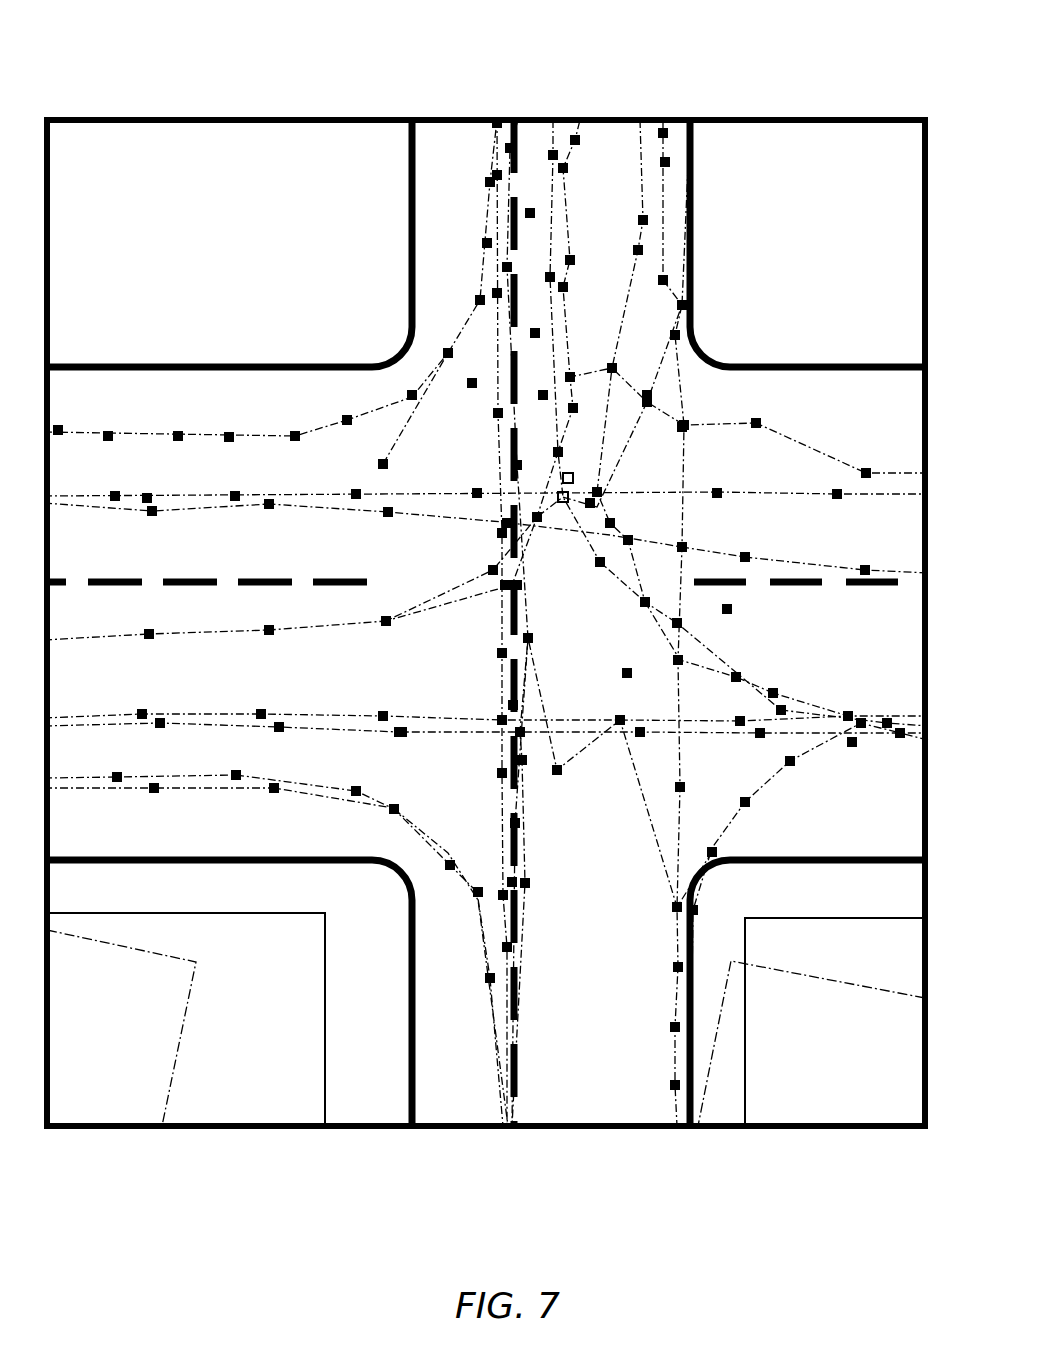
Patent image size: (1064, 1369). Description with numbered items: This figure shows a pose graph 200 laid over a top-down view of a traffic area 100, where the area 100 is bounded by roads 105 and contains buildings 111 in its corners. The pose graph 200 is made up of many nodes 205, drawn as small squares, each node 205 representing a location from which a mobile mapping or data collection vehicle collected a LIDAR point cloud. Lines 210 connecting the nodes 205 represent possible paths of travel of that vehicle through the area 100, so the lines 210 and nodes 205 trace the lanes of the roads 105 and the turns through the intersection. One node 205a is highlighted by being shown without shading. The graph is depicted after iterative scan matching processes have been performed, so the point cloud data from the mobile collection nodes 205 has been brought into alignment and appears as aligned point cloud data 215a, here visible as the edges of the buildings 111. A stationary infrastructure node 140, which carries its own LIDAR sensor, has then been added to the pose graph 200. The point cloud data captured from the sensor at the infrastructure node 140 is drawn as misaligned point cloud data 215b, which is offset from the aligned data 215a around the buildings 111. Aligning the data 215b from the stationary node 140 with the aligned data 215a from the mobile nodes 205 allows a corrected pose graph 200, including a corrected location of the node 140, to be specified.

The traffic area 100 is at (230, 80).
The road 105 is at (452, 148).
The pose graph 200 is at (873, 18).
The node 205 is at (178, 430).
The line 210 is at (457, 322).
The node 205a is at (575, 477).
The infrastructure node 140 is at (568, 502).
The building 111 is at (270, 998).
The aligned point cloud data 215a is at (325, 1088).
The misaligned point cloud data 215b is at (183, 1048).